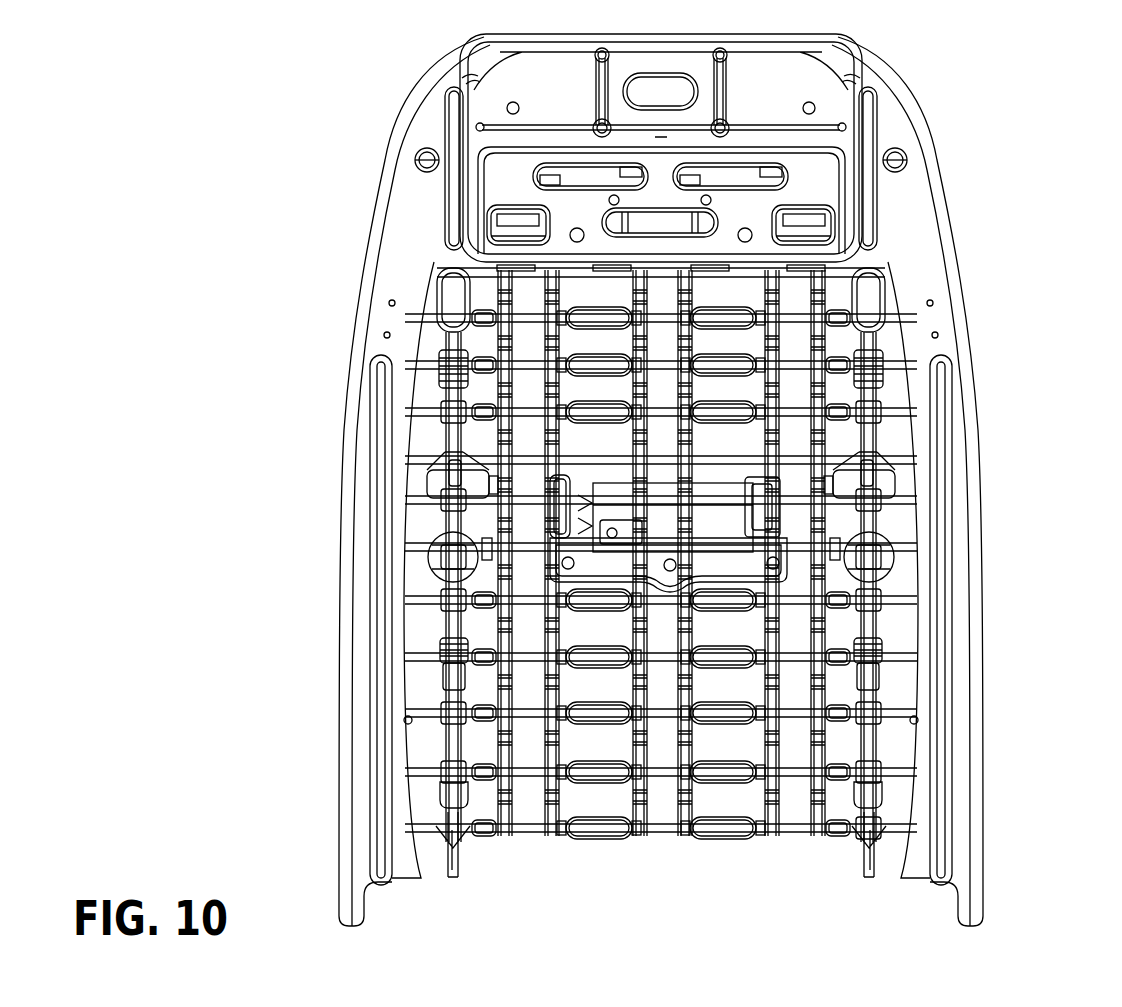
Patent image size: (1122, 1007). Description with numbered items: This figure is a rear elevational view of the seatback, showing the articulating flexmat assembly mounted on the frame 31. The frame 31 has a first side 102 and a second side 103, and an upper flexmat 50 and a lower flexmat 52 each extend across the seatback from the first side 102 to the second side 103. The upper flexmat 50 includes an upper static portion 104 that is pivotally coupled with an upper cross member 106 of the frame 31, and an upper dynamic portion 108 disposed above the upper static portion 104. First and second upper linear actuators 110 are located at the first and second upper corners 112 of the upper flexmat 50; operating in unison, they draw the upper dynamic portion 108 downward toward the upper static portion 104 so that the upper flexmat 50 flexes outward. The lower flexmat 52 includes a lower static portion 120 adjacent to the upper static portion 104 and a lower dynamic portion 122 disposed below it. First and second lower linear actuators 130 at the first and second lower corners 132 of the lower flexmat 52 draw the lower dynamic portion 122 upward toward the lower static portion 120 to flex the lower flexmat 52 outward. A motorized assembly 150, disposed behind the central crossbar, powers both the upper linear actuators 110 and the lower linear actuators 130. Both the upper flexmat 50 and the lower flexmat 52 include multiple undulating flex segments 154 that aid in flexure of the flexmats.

The frame 31 is at (905, 188).
The upper flexmat 50 is at (795, 408).
The lower flexmat 52 is at (800, 598).
The first side 102 is at (970, 722).
The second side 103 is at (350, 636).
The upper static portion 104 is at (500, 466).
The upper cross member 106 is at (540, 90).
The upper dynamic portion 108 is at (517, 277).
The upper linear actuators 110 is at (453, 343).
The upper corners 112 is at (435, 268).
The lower static portion 120 is at (515, 500).
The lower dynamic portion 122 is at (875, 825).
The lower linear actuators 130 is at (455, 697).
The lower corners 132 is at (455, 832).
The motorized assembly 150 is at (700, 520).
The undulating flex segments 154 is at (510, 745).